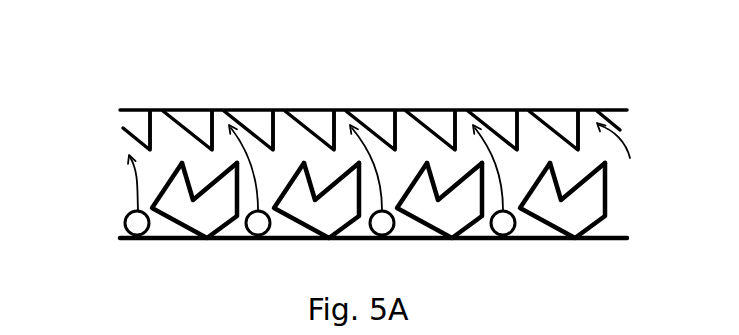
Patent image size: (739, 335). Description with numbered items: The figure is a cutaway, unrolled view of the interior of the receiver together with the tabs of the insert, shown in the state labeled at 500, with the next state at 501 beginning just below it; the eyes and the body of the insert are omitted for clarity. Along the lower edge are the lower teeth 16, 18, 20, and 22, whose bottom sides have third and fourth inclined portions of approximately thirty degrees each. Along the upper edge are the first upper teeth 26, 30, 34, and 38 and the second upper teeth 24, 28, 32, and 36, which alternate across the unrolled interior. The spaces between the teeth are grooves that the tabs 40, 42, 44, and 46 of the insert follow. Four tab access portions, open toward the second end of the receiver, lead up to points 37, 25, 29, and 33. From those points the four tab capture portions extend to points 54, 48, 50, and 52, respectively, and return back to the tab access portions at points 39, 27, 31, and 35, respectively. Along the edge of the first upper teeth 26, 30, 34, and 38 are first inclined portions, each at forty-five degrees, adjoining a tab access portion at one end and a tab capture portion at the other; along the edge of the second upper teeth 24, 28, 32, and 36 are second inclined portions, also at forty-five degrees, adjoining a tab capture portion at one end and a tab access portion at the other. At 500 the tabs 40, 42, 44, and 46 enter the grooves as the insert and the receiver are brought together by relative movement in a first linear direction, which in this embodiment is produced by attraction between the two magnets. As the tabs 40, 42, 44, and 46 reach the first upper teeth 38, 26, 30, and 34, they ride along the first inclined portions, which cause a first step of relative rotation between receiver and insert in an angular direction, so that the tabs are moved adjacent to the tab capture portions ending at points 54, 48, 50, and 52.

The cutaway unrolled view 500 is at (88, 80).
The cutaway unrolled view 501 is at (72, 334).
The lower tooth 16 is at (209, 230).
The lower tooth 18 is at (331, 230).
The lower tooth 20 is at (455, 230).
The lower tooth 22 is at (578, 230).
The second upper tooth 24 is at (198, 118).
The point 25 is at (224, 118).
The first upper tooth 26 is at (261, 118).
The point 27 is at (282, 118).
The second upper tooth 28 is at (322, 118).
The point 29 is at (347, 118).
The first upper tooth 30 is at (383, 118).
The point 31 is at (405, 118).
The second upper tooth 32 is at (442, 118).
The point 33 is at (466, 118).
The first upper tooth 34 is at (502, 118).
The point 35 is at (528, 118).
The second upper tooth 36 is at (567, 118).
The point 37 is at (595, 118).
The first upper tooth 38 is at (142, 118).
The point 39 is at (163, 118).
The tab 40 is at (133, 232).
The tab 42 is at (256, 232).
The tab 44 is at (380, 232).
The tab 46 is at (500, 232).
The point 48 is at (198, 190).
The point 50 is at (320, 190).
The point 52 is at (443, 190).
The point 54 is at (567, 190).